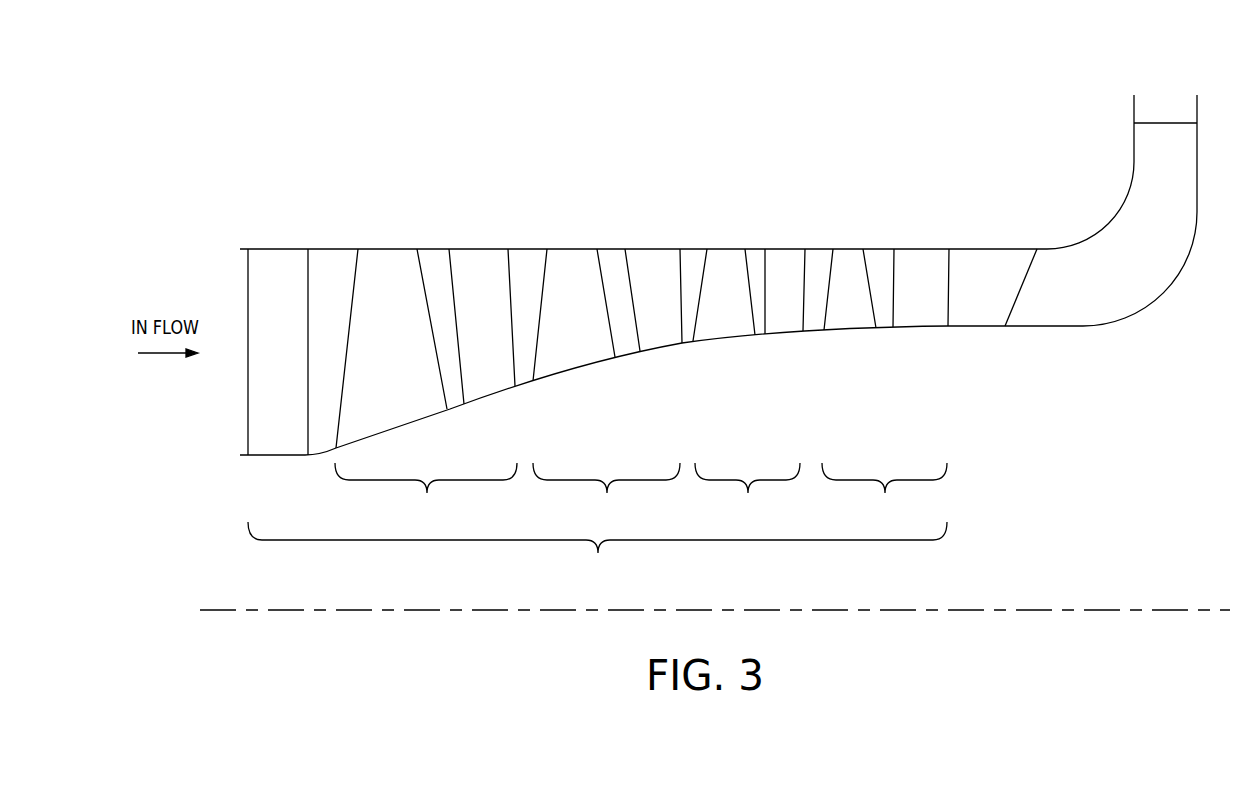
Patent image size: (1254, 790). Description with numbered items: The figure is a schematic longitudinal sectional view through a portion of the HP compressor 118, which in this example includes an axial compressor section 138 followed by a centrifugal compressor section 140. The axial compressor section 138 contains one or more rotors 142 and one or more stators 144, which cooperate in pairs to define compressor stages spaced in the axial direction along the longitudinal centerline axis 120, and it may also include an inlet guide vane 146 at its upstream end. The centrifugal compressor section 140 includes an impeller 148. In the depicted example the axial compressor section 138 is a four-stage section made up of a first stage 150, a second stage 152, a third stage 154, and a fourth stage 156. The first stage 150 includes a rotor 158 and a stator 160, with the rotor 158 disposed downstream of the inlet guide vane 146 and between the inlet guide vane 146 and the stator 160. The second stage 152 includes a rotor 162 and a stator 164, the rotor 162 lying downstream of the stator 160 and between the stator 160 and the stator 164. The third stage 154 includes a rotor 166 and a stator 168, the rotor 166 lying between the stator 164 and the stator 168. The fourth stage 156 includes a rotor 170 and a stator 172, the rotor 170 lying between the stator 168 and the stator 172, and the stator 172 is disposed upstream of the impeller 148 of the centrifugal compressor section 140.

The HP compressor 118 is at (183, 138).
The longitudinal centerline axis 120 is at (273, 608).
The axial compressor section 138 is at (597, 552).
The centrifugal compressor section 140 is at (1047, 173).
The rotors 142 is at (400, 397).
The stators 144 is at (498, 168).
The inlet guide vane 146 is at (275, 247).
The impeller 148 is at (1073, 243).
The first stage 150 is at (426, 493).
The second stage 152 is at (606, 493).
The third stage 154 is at (747, 493).
The fourth stage 156 is at (884, 493).
The rotor 158 is at (387, 247).
The stator 160 is at (483, 247).
The rotor 162 is at (572, 247).
The stator 164 is at (653, 247).
The rotor 166 is at (722, 247).
The stator 168 is at (785, 247).
The rotor 170 is at (850, 246).
The stator 172 is at (918, 246).